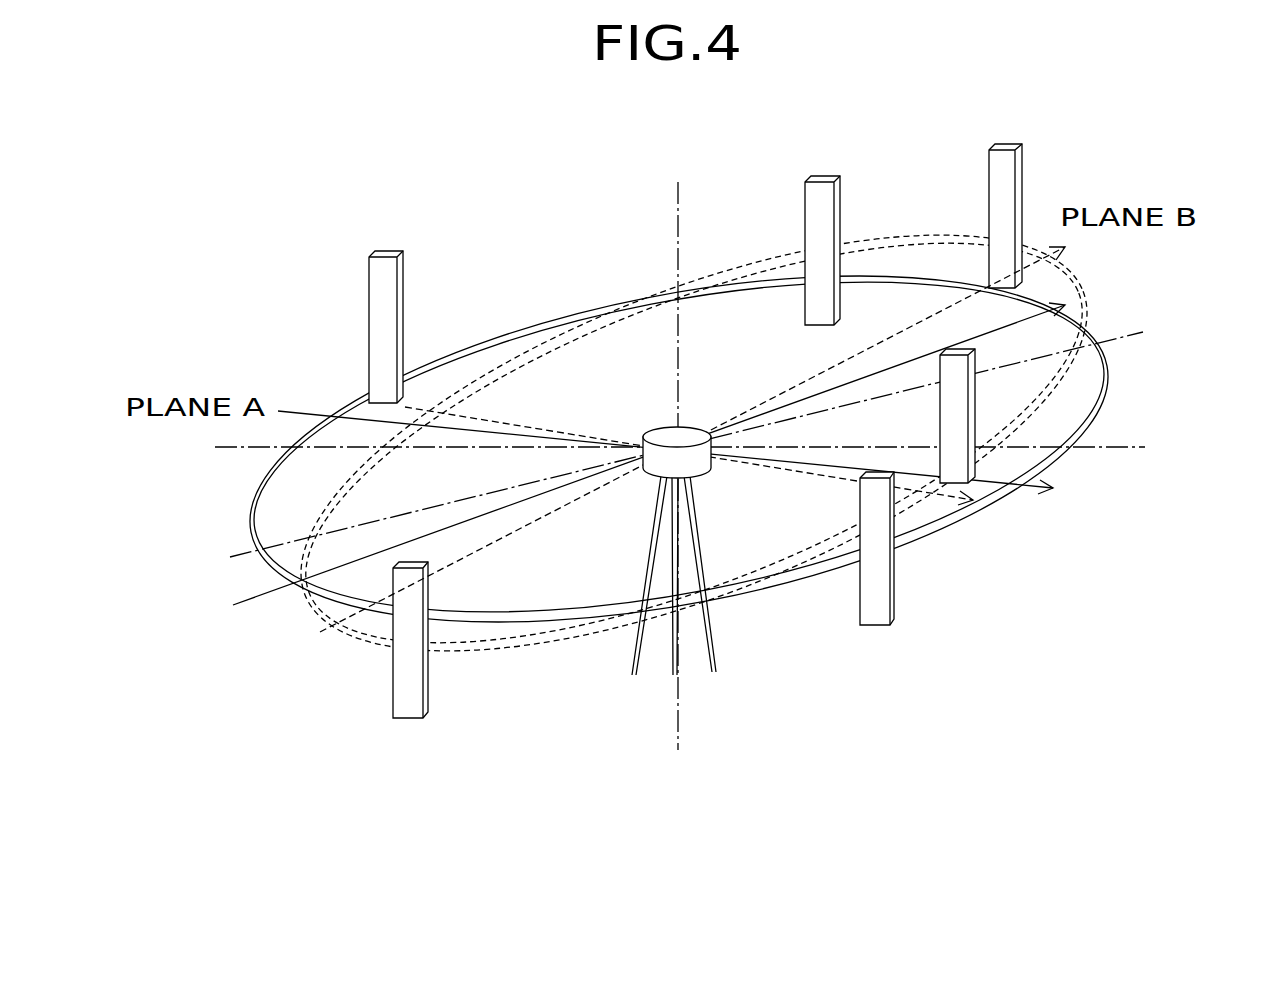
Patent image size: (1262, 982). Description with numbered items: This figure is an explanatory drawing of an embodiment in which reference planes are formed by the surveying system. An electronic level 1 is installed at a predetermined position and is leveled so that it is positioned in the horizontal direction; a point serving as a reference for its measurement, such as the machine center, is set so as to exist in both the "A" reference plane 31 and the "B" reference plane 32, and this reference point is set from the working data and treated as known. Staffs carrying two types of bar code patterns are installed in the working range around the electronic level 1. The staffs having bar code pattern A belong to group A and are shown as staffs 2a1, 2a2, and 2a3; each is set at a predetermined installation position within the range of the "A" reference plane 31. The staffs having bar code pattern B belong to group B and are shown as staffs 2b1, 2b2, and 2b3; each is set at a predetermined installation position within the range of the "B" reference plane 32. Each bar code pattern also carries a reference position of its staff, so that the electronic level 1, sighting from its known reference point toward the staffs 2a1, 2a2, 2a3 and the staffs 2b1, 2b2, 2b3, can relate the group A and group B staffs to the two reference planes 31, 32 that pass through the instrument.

The electronic level 1 is at (690, 426).
The staff belonging to group A 2a1 is at (403, 273).
The staff belonging to group A 2a2 is at (805, 225).
The staff belonging to group A 2a3 is at (895, 607).
The staff belonging to group B 2b1 is at (393, 700).
The staff belonging to group B 2b2 is at (975, 412).
The staff belonging to group B 2b3 is at (989, 192).
The A reference plane 31 is at (517, 328).
The B reference plane 32 is at (1087, 312).